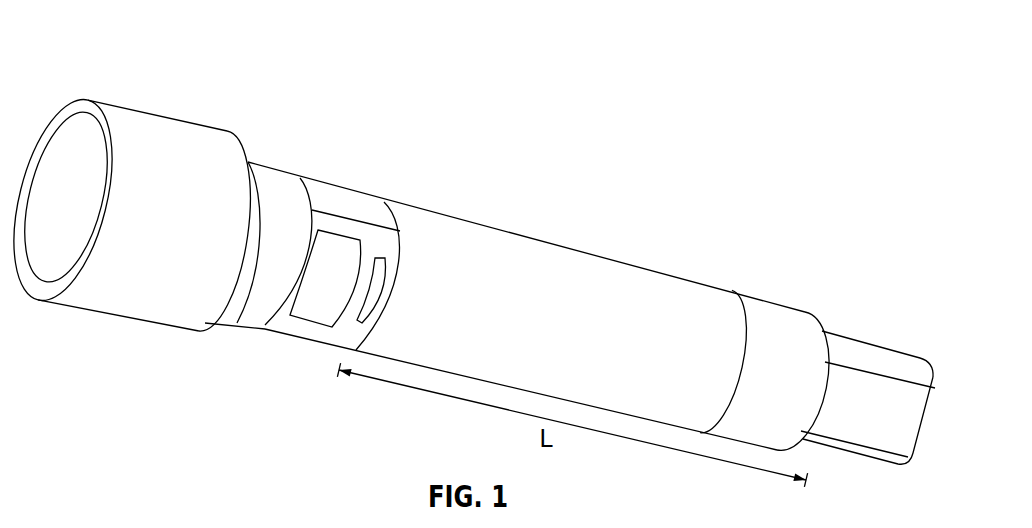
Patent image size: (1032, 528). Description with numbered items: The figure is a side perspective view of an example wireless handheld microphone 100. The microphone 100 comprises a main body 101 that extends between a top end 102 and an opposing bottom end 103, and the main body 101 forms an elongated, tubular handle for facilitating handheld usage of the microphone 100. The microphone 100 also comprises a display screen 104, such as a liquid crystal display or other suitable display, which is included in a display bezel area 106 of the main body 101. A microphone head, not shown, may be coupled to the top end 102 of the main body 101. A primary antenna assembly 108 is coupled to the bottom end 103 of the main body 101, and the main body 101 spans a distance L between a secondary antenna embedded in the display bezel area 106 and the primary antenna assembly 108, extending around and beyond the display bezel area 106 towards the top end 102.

The wireless handheld microphone 100 is at (590, 188).
The main body 101 is at (672, 292).
The top end 102 is at (79, 78).
The bottom end 103 is at (836, 284).
The display screen 104 is at (308, 296).
The display bezel area 106 is at (363, 235).
The primary antenna assembly 108 is at (840, 333).